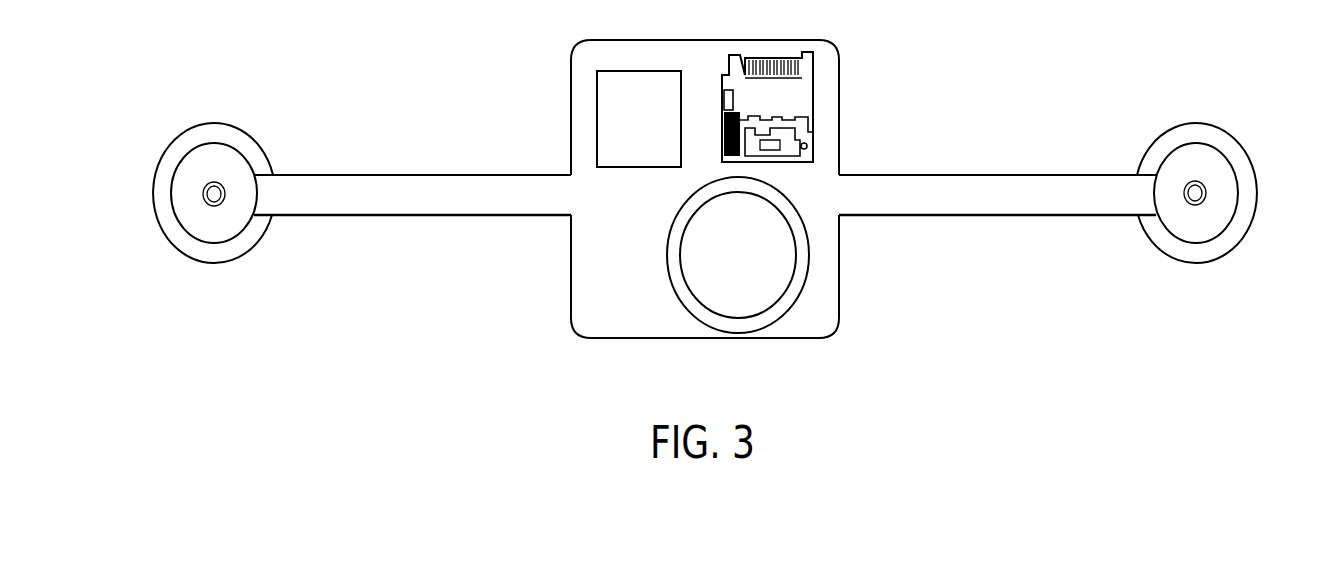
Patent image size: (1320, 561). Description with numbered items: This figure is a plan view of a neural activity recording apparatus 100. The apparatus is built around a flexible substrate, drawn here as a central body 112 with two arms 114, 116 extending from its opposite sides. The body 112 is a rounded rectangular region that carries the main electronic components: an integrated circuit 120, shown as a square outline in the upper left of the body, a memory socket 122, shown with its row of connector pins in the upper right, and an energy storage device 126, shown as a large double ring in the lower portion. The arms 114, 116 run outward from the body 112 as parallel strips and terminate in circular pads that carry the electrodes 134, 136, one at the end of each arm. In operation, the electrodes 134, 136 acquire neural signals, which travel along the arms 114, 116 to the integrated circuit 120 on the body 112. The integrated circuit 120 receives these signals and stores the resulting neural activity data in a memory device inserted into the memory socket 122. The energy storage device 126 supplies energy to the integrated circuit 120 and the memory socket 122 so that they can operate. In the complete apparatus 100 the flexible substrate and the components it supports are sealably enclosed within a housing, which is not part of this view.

The neural activity recording apparatus 100 is at (186, 78).
The body 112 is at (571, 283).
The arm 114 is at (397, 174).
The arm 116 is at (971, 173).
The integrated circuit 120 is at (610, 113).
The memory socket 122 is at (802, 105).
The energy storage device 126 is at (738, 308).
The electrode 134 is at (247, 144).
The electrode 136 is at (1192, 127).